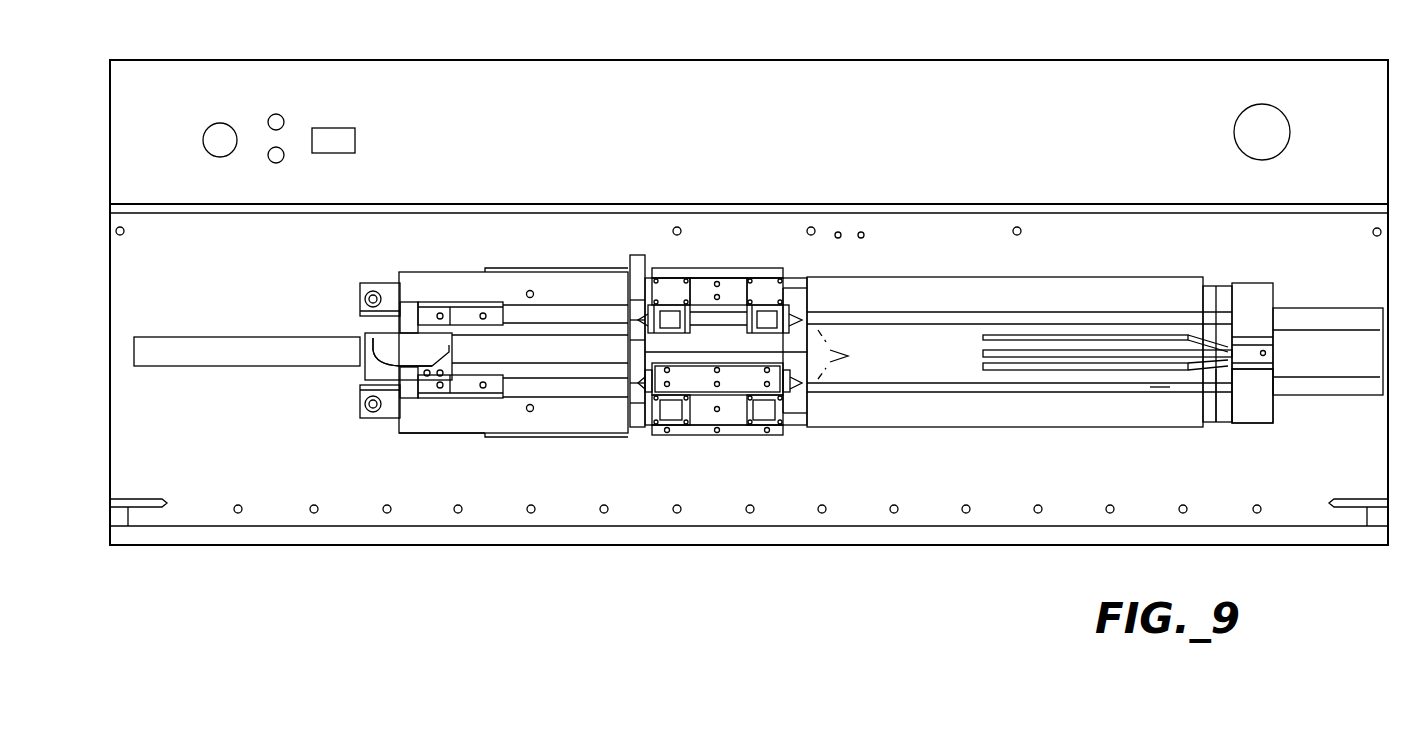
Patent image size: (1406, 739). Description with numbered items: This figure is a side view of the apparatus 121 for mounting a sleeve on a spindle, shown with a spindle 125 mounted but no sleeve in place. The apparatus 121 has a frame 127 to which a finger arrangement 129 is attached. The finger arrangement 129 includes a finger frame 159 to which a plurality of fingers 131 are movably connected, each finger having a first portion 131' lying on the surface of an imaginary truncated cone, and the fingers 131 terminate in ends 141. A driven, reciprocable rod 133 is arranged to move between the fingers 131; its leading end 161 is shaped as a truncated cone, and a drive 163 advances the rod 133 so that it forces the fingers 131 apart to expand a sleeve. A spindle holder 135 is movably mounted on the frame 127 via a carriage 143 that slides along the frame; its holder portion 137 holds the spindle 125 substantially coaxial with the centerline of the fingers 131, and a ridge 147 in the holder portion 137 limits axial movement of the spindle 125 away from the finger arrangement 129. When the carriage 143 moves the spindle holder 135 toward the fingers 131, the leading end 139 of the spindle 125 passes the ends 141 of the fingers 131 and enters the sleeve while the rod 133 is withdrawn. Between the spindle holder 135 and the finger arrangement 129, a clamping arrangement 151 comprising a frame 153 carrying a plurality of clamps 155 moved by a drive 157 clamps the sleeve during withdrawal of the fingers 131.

The apparatus 121 is at (864, 36).
The spindle 125 is at (215, 345).
The frame 127 is at (219, 259).
The finger arrangement 129 is at (1158, 392).
The fingers 131 is at (1107, 300).
The first portion of finger 131' is at (1105, 304).
The rod 133 is at (1240, 330).
The spindle holder 135 is at (419, 437).
The holder portion 137 is at (366, 373).
The leading end of spindle 139 is at (603, 347).
The ends of fingers 141 is at (992, 335).
The carriage 143 is at (468, 284).
The ridge 147 is at (352, 330).
The clamping arrangement 151 is at (732, 262).
The frame of clamping arrangement 153 is at (688, 435).
The clamps 155 is at (859, 354).
The drive for clamps 157 is at (705, 378).
The finger frame 159 is at (1250, 415).
The leading end of rod 161 is at (1215, 372).
The rod drive 163 is at (1300, 316).